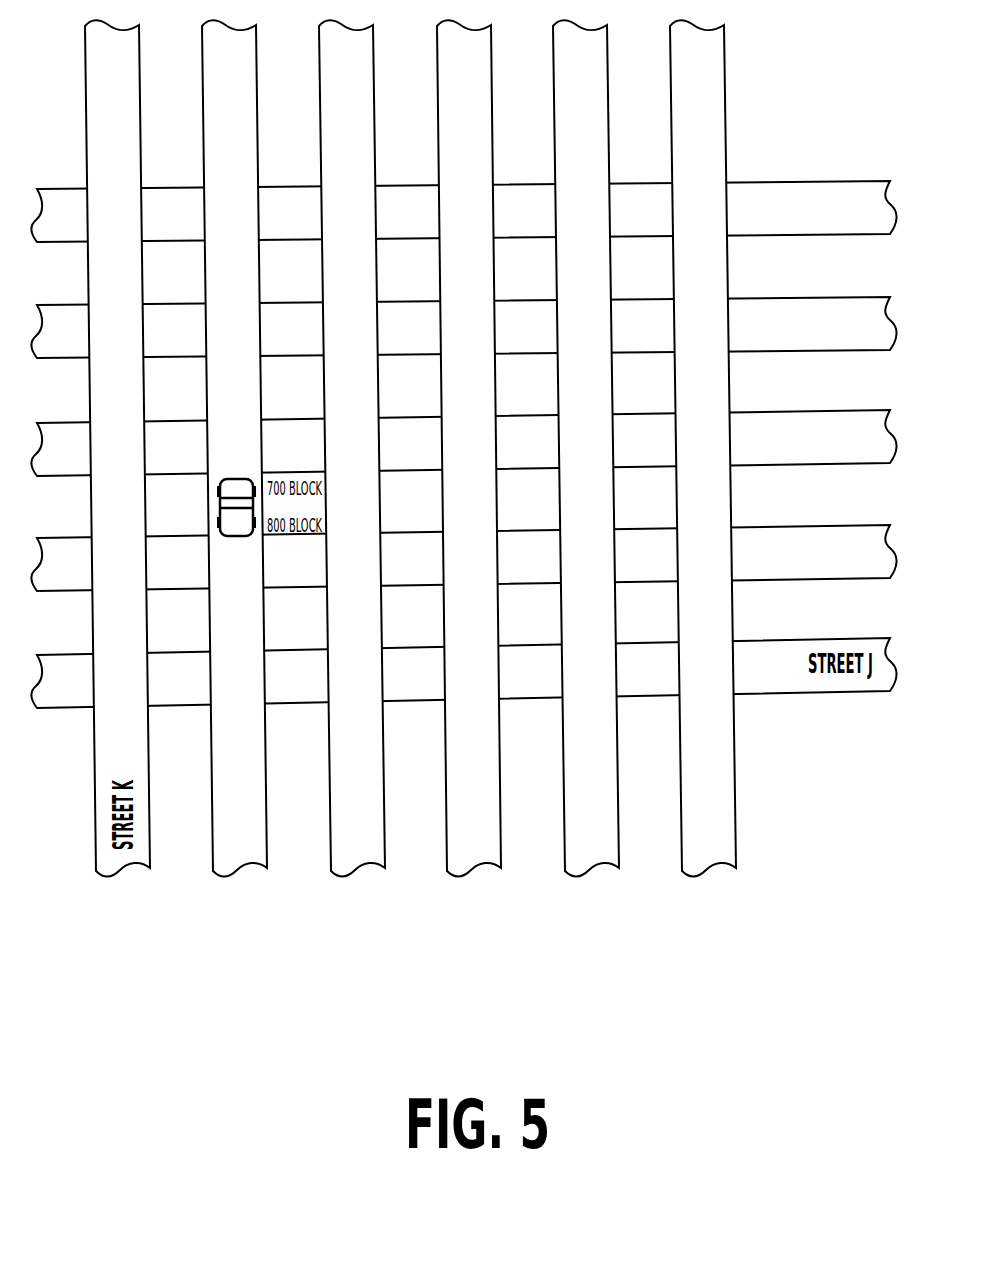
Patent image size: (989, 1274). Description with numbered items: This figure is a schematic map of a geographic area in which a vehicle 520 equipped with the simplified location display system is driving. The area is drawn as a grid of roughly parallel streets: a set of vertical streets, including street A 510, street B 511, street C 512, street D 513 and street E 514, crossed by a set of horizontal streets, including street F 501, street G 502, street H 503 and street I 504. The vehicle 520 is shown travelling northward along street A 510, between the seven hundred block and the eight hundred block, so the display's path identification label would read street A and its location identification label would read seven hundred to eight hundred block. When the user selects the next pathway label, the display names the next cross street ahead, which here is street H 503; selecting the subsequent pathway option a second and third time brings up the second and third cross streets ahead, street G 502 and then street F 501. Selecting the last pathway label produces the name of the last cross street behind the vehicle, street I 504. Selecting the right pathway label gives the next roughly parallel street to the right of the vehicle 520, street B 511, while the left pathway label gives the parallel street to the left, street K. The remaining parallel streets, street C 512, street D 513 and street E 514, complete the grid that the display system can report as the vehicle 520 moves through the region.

The Street F 501 is at (789, 222).
The Street G 502 is at (790, 337).
The Street H 503 is at (790, 451).
The Street I 504 is at (792, 564).
The Street A 510 is at (257, 764).
The Street B 511 is at (375, 764).
The Street C 512 is at (491, 764).
The Street D 513 is at (608, 764).
The Street E 514 is at (725, 764).
The vehicle 520 is at (236, 468).